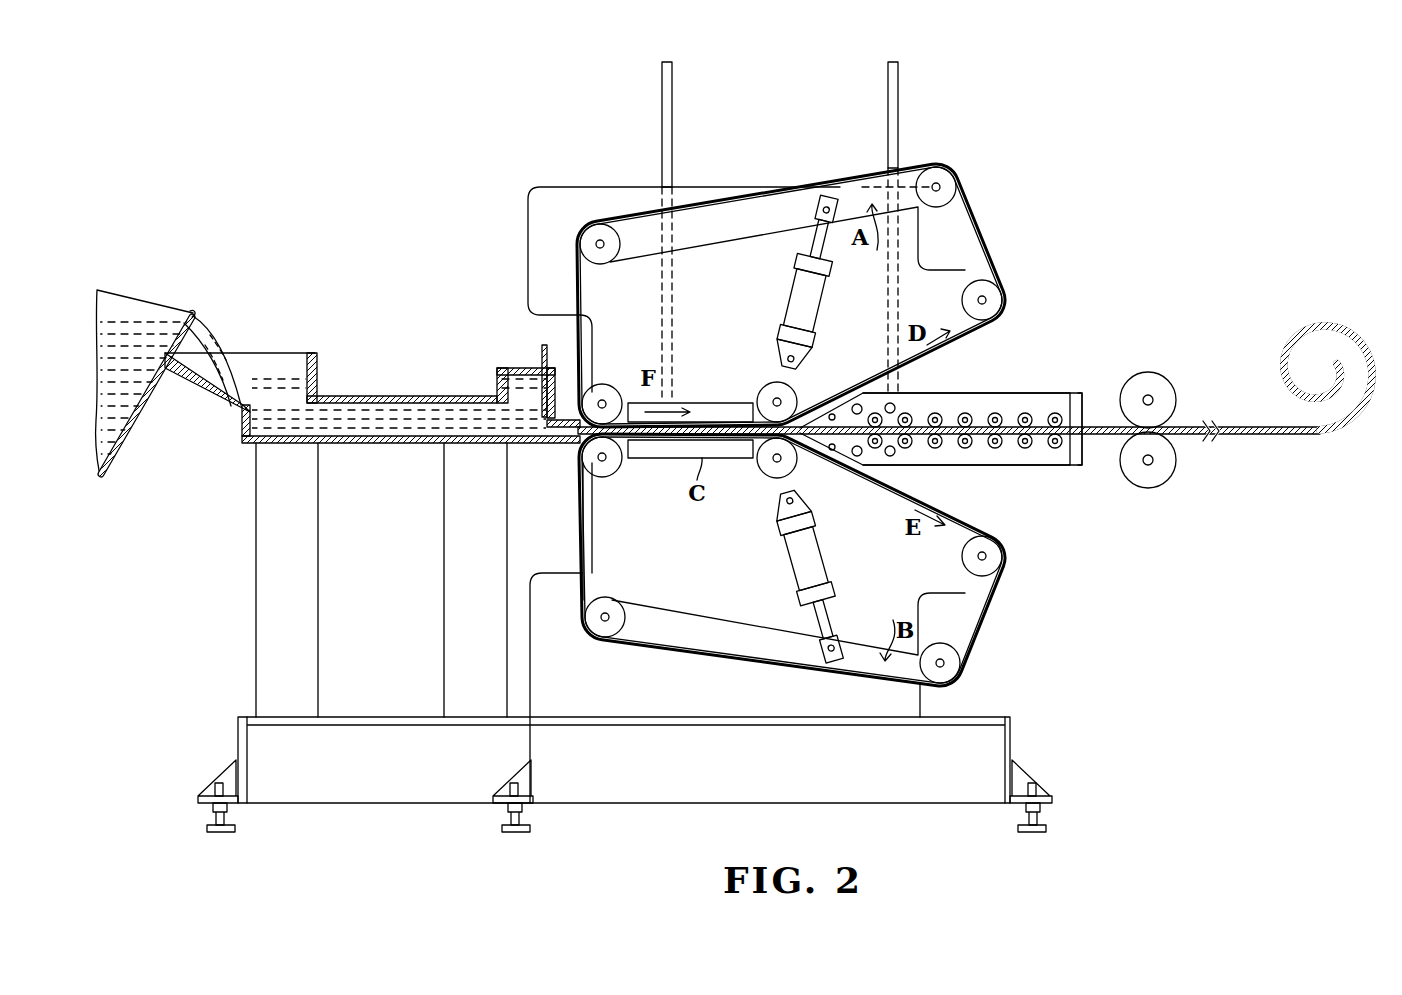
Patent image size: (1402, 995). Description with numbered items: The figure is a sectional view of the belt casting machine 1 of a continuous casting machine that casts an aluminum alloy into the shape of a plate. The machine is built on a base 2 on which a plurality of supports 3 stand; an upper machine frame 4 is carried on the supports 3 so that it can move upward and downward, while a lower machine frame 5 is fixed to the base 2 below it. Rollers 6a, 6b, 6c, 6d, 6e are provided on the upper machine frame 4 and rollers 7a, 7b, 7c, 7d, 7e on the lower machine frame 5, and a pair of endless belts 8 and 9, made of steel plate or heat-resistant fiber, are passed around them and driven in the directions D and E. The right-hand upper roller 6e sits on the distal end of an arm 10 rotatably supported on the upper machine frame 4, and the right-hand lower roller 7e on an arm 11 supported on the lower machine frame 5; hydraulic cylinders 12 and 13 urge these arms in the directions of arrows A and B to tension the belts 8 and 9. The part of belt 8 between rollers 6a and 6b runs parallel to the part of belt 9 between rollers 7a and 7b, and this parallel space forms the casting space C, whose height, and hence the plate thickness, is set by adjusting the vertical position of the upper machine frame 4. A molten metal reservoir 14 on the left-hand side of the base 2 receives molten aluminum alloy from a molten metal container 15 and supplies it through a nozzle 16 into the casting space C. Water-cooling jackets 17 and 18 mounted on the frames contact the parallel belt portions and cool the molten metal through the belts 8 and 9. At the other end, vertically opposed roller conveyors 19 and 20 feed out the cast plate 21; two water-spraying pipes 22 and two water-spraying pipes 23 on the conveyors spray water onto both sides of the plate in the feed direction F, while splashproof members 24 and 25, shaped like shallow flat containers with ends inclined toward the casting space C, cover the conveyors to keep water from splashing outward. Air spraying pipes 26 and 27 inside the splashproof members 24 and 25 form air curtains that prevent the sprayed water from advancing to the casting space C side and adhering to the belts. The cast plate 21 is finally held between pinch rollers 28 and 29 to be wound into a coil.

The belt casting machine 1 is at (983, 130).
The base 2 is at (1012, 735).
The supports 3 is at (672, 108).
The upper machine frame 4 is at (578, 187).
The lower machine frame 5 is at (550, 570).
The roller 6a is at (612, 385).
The roller 6b is at (760, 386).
The roller 6c is at (962, 299).
The roller 6d is at (607, 264).
The right-hand upper roller 6e is at (946, 207).
The roller 7a is at (615, 477).
The roller 7b is at (798, 464).
The roller 7c is at (962, 556).
The roller 7d is at (613, 598).
The right-hand lower roller 7e is at (950, 643).
The upper endless belt 8 is at (885, 375).
The lower endless belt 9 is at (897, 513).
The arm 10 is at (742, 228).
The arm 11 is at (730, 630).
The hydraulic cylinder 12 is at (833, 289).
The hydraulic cylinder 13 is at (830, 568).
The molten metal reservoir 14 is at (380, 443).
The molten metal container 15 is at (118, 430).
The nozzle 16 is at (570, 443).
The water-cooling jacket 17 is at (700, 397).
The water-cooling jacket 18 is at (735, 460).
The roller conveyor 19 is at (1050, 403).
The roller conveyor 20 is at (1043, 465).
The cast plate 21 is at (1102, 437).
The water-spraying pipes 22 is at (890, 408).
The water-spraying pipes 23 is at (890, 451).
The splashproof member 24 is at (982, 393).
The splashproof member 25 is at (982, 465).
The air spraying pipe 26 is at (832, 413).
The air spraying pipe 27 is at (857, 453).
The pinch roller 28 is at (1177, 477).
The pinch roller 29 is at (1160, 373).